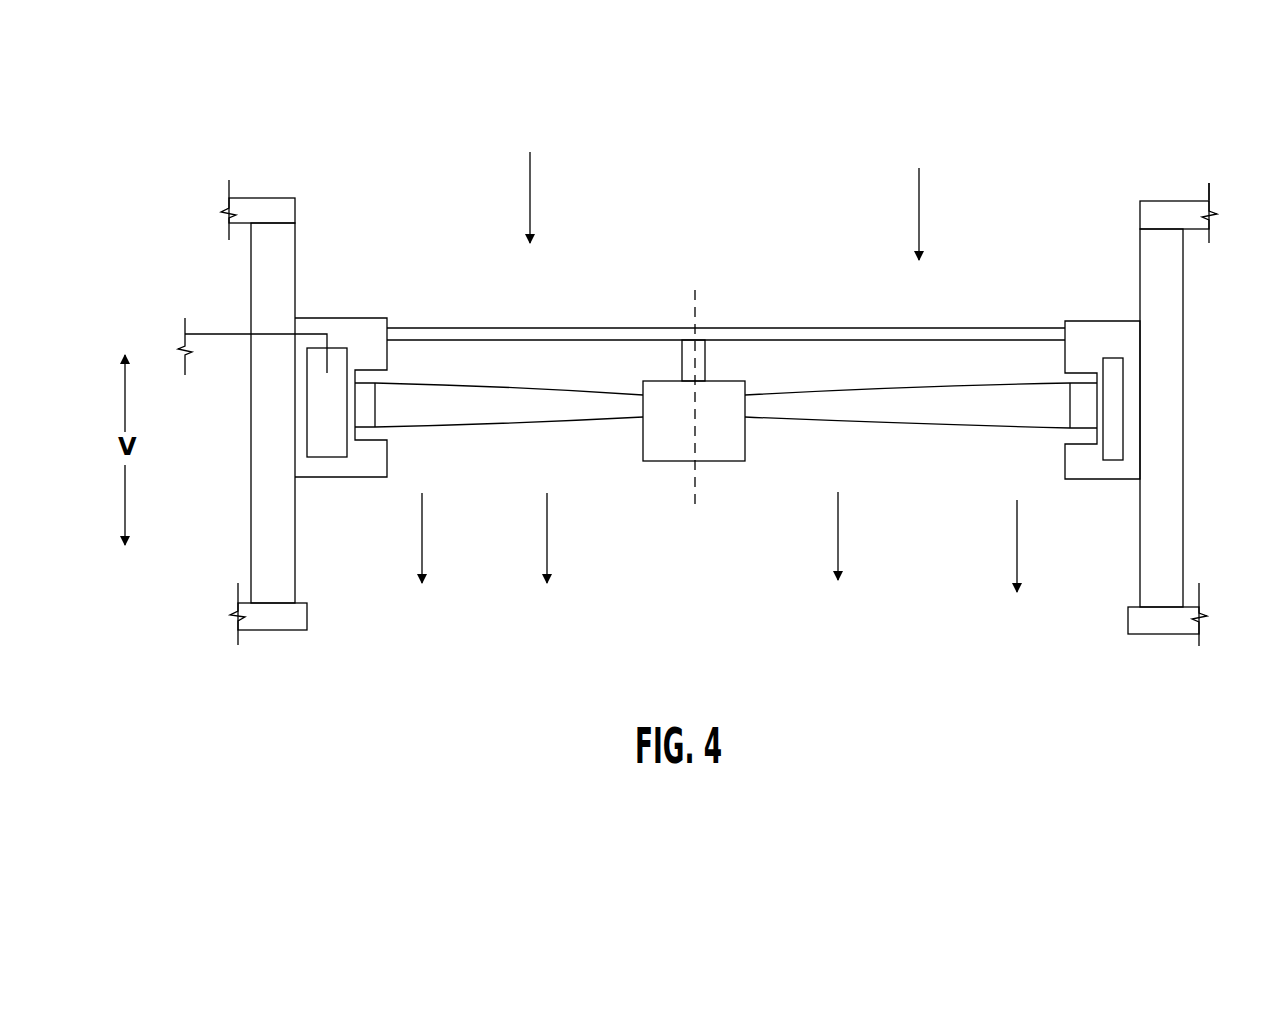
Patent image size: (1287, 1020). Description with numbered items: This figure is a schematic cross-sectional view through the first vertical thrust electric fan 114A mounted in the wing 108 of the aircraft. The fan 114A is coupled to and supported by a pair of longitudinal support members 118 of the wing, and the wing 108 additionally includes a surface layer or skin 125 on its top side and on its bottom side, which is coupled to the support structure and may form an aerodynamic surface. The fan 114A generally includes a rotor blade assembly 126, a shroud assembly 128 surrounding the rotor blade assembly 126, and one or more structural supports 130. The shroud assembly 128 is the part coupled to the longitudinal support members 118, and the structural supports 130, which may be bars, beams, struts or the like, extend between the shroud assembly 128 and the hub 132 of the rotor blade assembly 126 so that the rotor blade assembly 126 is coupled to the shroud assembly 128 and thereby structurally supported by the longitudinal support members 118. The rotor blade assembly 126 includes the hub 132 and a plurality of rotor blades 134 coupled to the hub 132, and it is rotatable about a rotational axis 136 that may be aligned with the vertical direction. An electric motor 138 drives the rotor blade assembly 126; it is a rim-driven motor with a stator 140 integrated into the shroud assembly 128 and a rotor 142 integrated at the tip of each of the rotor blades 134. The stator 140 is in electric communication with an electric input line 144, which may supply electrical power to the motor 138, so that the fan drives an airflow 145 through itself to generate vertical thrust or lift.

The wing 108 is at (1206, 158).
The first vertical thrust electric fan 114A is at (1017, 163).
The longitudinal support members 118 is at (268, 551).
The surface layer 125 is at (265, 198).
The rotor blade assembly 126 is at (924, 513).
The shroud assembly 128 is at (1113, 320).
The structural supports 130 is at (537, 335).
The hub 132 is at (660, 450).
The rotor blades 134 is at (484, 410).
The rotational axis 136 is at (695, 318).
The electric motor 138 is at (365, 332).
The stator 140 is at (334, 387).
The rotor 142 is at (365, 410).
The electric input line 144 is at (233, 332).
The airflow 145 is at (530, 192).